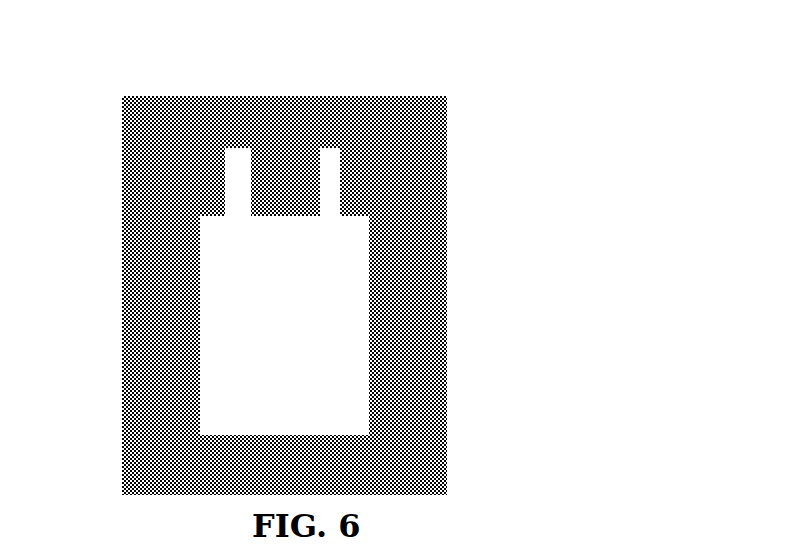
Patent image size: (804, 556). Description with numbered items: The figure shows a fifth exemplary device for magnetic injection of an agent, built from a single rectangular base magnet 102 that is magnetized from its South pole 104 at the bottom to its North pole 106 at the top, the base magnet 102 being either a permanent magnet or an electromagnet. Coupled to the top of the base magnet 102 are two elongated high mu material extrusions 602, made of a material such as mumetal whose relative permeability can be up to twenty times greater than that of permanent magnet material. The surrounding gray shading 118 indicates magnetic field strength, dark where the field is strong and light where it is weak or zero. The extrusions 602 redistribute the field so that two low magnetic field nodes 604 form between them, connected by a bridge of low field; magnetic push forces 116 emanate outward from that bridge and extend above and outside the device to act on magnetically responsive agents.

The base magnet 102 is at (363, 339).
The South pole 104 is at (297, 408).
The North pole 106 is at (296, 247).
The magnetic push forces 116 is at (283, 150).
The gray shading 118 is at (410, 478).
The high mu material extrusions 602 is at (275, 197).
The low magnetic field nodes 604 is at (300, 189).